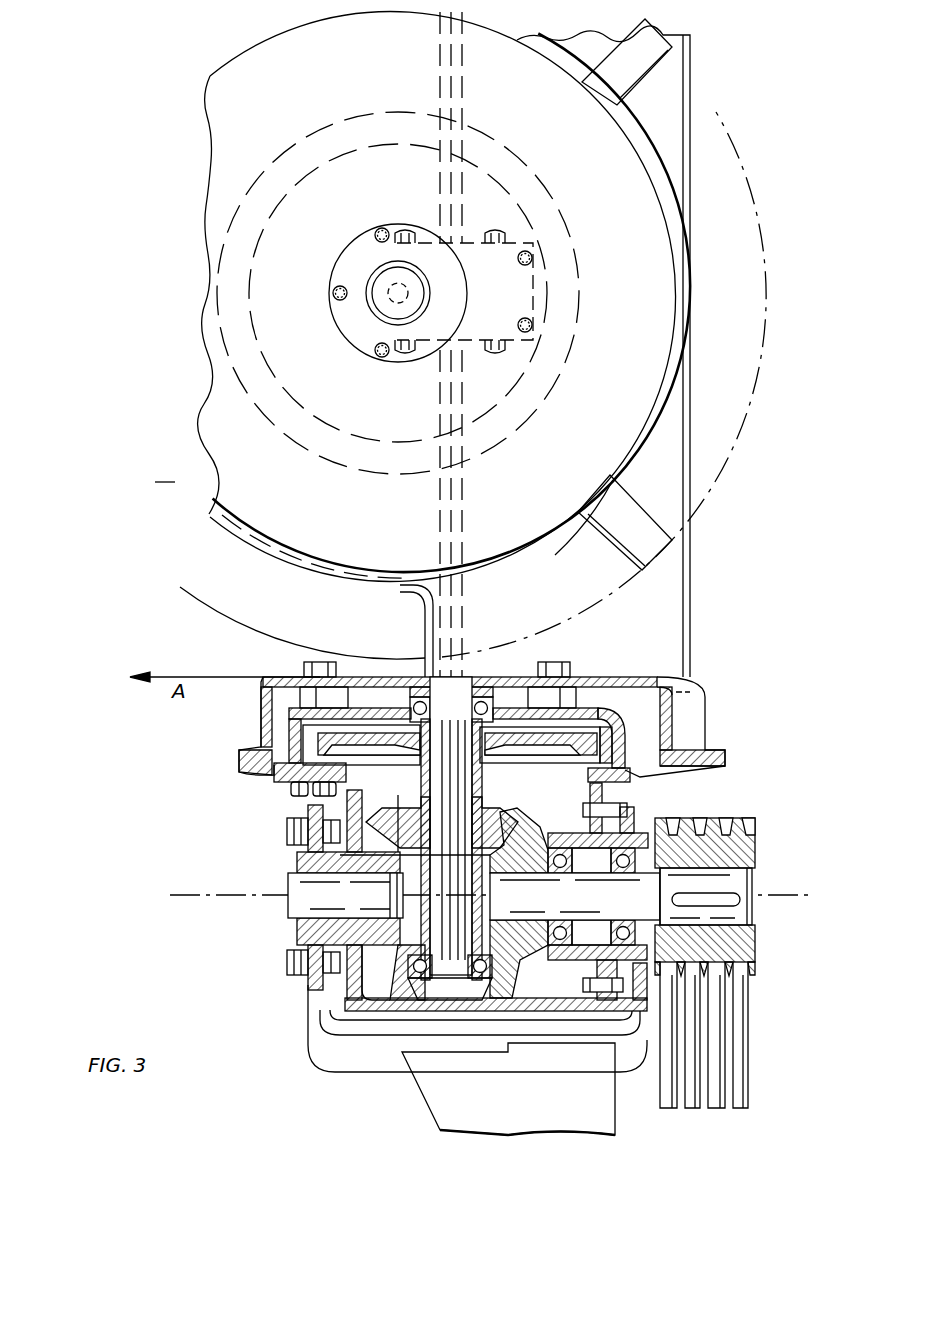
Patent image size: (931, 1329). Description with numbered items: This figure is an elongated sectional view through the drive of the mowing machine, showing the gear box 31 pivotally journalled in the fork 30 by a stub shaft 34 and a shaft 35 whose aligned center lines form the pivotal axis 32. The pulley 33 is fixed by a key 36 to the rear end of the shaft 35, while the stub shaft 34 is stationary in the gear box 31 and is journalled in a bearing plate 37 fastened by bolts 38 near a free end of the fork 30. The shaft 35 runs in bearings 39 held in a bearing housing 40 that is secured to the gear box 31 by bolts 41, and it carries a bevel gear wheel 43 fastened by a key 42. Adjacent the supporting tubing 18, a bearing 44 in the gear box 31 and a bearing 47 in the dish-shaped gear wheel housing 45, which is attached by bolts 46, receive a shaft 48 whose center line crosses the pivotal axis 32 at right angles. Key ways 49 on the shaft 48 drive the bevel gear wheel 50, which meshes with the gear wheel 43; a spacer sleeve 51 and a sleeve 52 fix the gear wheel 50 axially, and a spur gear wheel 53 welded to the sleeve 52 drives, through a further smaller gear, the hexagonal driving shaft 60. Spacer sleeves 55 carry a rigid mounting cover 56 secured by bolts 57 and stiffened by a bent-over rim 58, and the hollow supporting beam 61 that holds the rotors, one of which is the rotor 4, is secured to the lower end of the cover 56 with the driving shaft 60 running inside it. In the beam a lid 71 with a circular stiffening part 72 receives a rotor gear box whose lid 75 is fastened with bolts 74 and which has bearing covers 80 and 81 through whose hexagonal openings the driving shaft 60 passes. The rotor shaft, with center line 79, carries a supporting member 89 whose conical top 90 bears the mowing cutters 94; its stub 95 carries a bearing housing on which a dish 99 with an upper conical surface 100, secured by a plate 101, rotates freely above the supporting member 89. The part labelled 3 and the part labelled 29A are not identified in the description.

The blade housing wall 3 is at (690, 180).
The rotor 4 is at (165, 471).
The supporting tubing 18 is at (610, 1105).
The drive belts 29A is at (740, 1110).
The fork 30 is at (350, 1073).
The gear box 31 is at (395, 1015).
The pivotal axis 32 is at (214, 895).
The pulley 33 is at (740, 840).
The stub shaft 34 is at (286, 906).
The shaft 35 is at (758, 900).
The key 36 is at (725, 900).
The bearing plate 37 is at (288, 845).
The bolts 38 is at (288, 960).
The bearings 39 is at (572, 861).
The bearing housing 40 is at (590, 838).
The bolts 41 is at (588, 954).
The key 42 is at (520, 900).
The bevel gear wheel 43 is at (510, 980).
The bearing 44 is at (478, 975).
The gear wheel housing 45 is at (498, 675).
The bolts 46 is at (280, 782).
The bearing 47 is at (462, 690).
The shaft 48 is at (447, 908).
The key ways 49 is at (475, 780).
The bevel gear wheel 50 is at (520, 820).
The spacer sleeve 51 is at (430, 920).
The sleeve 52 is at (422, 775).
The spur gear wheel 53 is at (590, 730).
The spacer sleeves 55 is at (305, 695).
The mounting cover 56 is at (660, 677).
The bolts 57 is at (328, 665).
The bent-over rim 58 is at (703, 750).
The hexagonal driving shaft 60 is at (464, 523).
The supporting beam 61 is at (692, 630).
The lid 71 is at (425, 600).
The stiffening part 72 is at (278, 157).
The bolts 74 is at (533, 257).
The lid 75 is at (540, 300).
The center line 79 is at (385, 285).
The bearing cover 80 is at (465, 352).
The bearing cover 81 is at (470, 236).
The supporting member 89 is at (242, 546).
The top 90 is at (554, 544).
The mowing cutters 94 is at (636, 30).
The stub 95 is at (410, 290).
The dish 99 is at (212, 424).
The upper conical surface 100 is at (268, 50).
The plate 101 is at (348, 335).